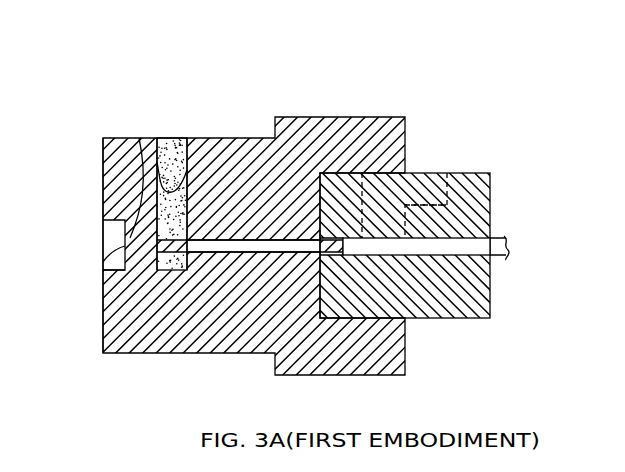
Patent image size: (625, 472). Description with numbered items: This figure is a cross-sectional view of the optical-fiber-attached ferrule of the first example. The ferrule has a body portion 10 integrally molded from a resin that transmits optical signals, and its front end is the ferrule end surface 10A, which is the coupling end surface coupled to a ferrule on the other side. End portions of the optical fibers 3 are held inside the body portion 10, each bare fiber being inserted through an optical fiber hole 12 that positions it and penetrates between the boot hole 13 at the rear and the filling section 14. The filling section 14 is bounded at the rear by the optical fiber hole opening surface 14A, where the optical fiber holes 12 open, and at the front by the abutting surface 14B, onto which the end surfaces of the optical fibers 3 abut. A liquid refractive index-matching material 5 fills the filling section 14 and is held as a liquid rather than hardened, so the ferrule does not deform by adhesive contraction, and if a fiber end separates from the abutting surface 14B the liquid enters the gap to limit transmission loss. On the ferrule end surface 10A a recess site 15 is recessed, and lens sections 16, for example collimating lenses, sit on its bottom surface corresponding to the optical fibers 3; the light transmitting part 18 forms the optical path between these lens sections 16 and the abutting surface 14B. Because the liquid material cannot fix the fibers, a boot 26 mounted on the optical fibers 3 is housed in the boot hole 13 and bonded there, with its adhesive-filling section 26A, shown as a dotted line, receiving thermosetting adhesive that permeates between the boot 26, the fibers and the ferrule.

The optical fiber 3 is at (160, 238).
The liquid refractive index-matching material 5 is at (170, 150).
The body portion 10 is at (252, 138).
The ferrule end surface 10A is at (103, 178).
The optical fiber hole 12 is at (248, 249).
The boot hole 13 is at (385, 178).
The filling section 14 is at (156, 126).
The optical fiber hole opening surface 14A is at (190, 139).
The abutting surface 14B is at (139, 138).
The recess site 15 is at (98, 236).
The lens section 16 is at (100, 264).
The light transmitting part 18 is at (126, 178).
The boot 26 is at (491, 205).
The adhesive-filling section 26A is at (418, 196).